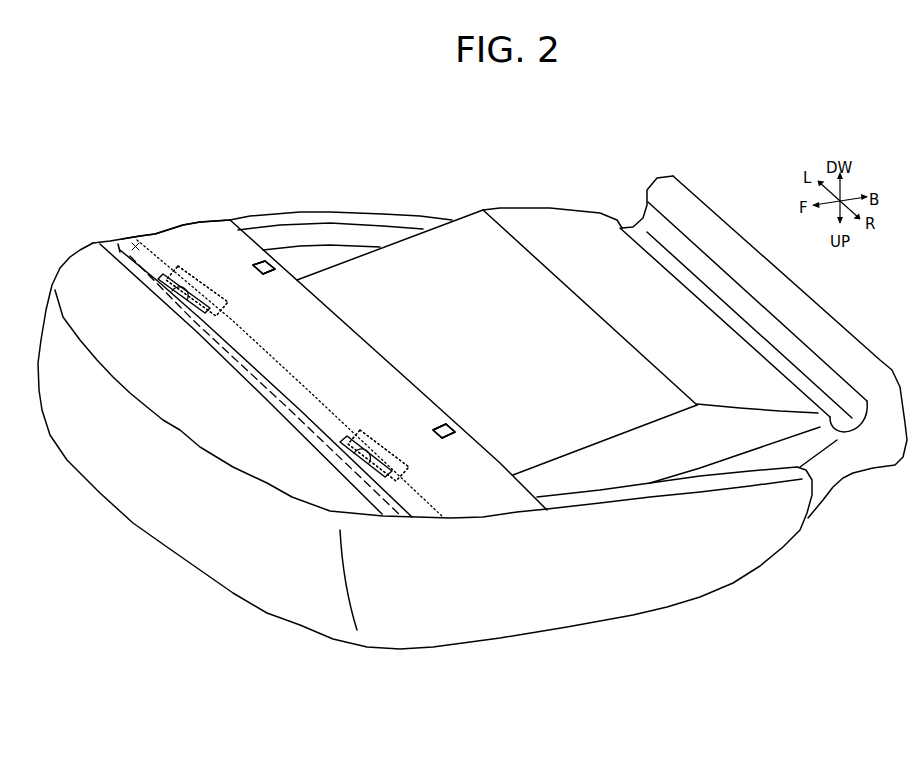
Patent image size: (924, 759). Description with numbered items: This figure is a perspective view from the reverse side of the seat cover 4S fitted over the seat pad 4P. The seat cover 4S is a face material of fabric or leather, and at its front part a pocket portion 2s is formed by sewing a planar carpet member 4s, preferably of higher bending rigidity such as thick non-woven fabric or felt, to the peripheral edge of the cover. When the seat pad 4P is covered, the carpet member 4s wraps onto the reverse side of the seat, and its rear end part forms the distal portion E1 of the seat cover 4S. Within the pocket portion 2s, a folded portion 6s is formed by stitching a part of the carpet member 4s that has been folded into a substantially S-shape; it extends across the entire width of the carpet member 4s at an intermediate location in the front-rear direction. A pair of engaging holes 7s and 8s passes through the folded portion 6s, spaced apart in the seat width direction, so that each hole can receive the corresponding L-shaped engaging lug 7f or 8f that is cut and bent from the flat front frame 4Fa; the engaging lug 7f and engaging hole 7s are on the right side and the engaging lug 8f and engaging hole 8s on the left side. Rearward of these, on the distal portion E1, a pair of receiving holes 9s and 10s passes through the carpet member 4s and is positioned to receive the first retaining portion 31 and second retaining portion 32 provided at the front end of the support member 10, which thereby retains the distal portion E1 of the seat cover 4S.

The pocket portion 2s is at (84, 282).
The folded portion 6s is at (135, 247).
The carpet member 4s is at (197, 240).
The seat cover 4S is at (372, 212).
The seat pad 4P is at (553, 227).
The distal portion E1 is at (362, 362).
The second retaining portion 32 is at (272, 265).
The first retaining portion 31 is at (452, 427).
The support member 10 is at (395, 308).
The receiving hole 10s is at (263, 275).
The receiving hole 9s is at (447, 437).
The engaging hole 8s is at (168, 292).
The engaging hole 7s is at (350, 452).
The engaging lug 8f is at (188, 276).
The engaging lug 7f is at (373, 443).
The front frame 4Fa is at (288, 365).